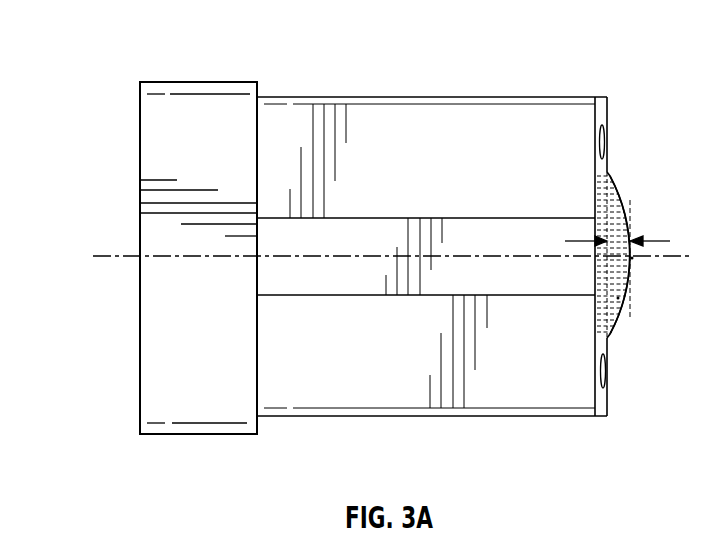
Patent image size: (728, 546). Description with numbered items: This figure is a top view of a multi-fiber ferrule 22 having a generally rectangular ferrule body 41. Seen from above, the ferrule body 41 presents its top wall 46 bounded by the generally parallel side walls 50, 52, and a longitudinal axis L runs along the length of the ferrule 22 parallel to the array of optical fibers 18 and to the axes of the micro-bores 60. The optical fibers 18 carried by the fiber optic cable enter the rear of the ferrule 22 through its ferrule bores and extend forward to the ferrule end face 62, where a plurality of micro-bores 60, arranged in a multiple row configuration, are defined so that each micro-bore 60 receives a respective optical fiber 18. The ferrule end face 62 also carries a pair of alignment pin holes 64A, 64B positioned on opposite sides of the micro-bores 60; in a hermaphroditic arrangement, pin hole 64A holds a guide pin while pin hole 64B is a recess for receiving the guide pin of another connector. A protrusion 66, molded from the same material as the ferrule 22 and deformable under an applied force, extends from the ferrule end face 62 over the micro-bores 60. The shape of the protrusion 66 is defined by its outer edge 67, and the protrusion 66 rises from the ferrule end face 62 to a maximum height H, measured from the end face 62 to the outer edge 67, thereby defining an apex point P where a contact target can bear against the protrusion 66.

The ferrule 22 is at (127, 56).
The ferrule body 41 is at (549, 69).
The top wall 46 is at (415, 187).
The side wall 50 is at (435, 97).
The side wall 52 is at (435, 416).
The micro-bore 60 is at (615, 224).
The ferrule end face 62 is at (636, 405).
The alignment pin hole 64A is at (601, 371).
The alignment pin hole 64B is at (600, 142).
The protrusion 66 is at (640, 184).
The outer edge 67 is at (618, 322).
The optical fiber 18 is at (618, 298).
The maximum height H is at (655, 241).
The apex point P is at (632, 262).
The longitudinal axis L is at (115, 256).